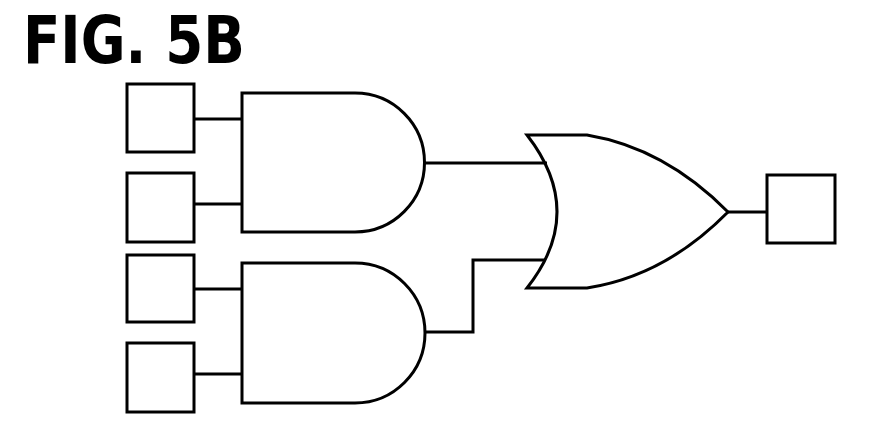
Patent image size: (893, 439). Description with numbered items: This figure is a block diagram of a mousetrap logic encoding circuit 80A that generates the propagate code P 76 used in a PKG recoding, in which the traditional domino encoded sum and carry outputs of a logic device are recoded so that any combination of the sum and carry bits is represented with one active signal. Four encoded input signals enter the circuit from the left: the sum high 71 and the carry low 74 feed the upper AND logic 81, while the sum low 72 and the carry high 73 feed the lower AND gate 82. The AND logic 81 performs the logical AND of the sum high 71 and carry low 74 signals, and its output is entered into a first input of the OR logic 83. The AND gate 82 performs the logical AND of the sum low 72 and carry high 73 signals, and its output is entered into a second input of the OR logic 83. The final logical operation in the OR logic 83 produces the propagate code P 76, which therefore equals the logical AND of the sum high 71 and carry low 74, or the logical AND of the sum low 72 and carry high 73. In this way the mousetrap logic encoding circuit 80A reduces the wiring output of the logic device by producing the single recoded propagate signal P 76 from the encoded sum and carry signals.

The mousetrap logic encoding circuit 80A is at (545, 100).
The sum high 71 is at (148, 146).
The carry low 74 is at (148, 234).
The sum low 72 is at (148, 316).
The carry high 73 is at (148, 404).
The AND logic 81 is at (309, 200).
The AND gate 82 is at (309, 370).
The OR logic 83 is at (589, 286).
The propagate code P 76 is at (788, 234).